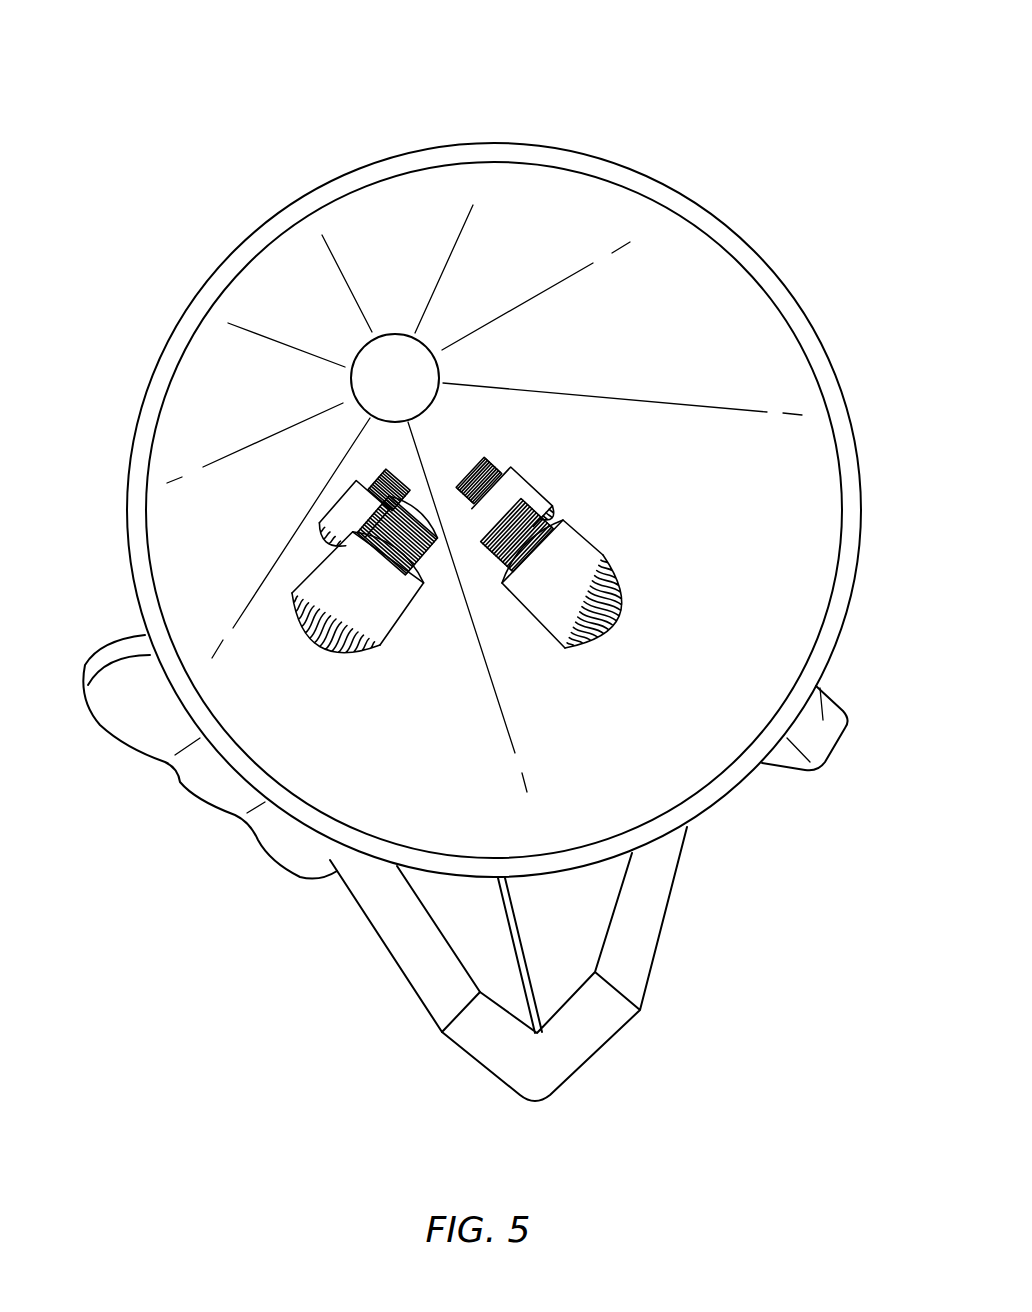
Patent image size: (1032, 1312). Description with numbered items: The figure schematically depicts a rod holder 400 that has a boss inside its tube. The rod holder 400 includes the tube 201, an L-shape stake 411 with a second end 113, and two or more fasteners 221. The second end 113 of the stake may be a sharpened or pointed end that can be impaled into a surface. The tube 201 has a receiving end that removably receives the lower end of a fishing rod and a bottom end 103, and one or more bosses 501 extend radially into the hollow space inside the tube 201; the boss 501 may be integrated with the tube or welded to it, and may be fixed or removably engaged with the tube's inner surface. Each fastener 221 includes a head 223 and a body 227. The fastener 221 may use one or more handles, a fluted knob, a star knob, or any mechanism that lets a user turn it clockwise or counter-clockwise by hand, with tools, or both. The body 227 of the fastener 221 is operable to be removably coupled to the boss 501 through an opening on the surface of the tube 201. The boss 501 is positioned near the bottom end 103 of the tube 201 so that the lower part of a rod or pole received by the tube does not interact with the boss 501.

The rod holder 400 is at (124, 92).
The tube 201 is at (318, 125).
The bottom end 103 is at (490, 146).
The body 227 is at (493, 522).
The boss 501 is at (610, 614).
The fastener 221 is at (62, 621).
The head 223 is at (125, 650).
The L-shape stake 411 is at (545, 964).
The second end 113 is at (410, 940).